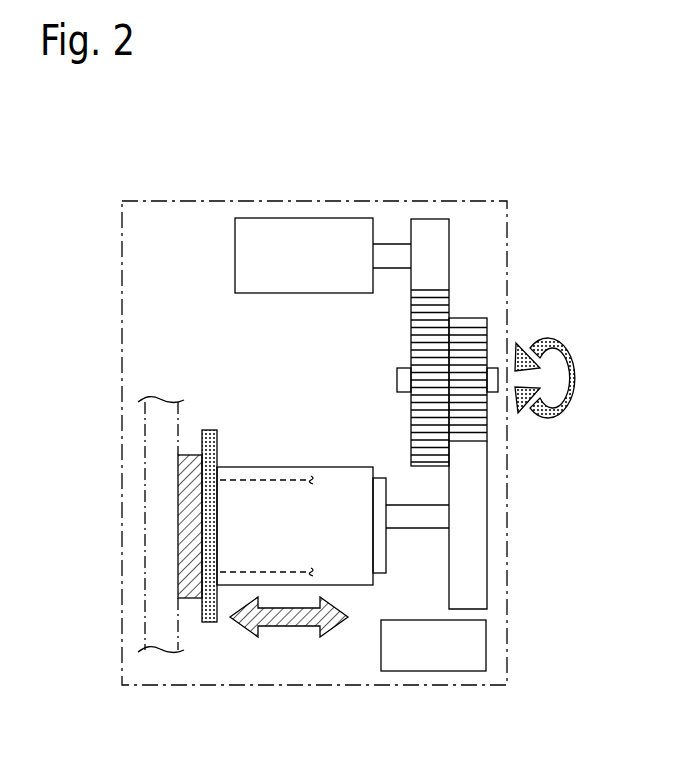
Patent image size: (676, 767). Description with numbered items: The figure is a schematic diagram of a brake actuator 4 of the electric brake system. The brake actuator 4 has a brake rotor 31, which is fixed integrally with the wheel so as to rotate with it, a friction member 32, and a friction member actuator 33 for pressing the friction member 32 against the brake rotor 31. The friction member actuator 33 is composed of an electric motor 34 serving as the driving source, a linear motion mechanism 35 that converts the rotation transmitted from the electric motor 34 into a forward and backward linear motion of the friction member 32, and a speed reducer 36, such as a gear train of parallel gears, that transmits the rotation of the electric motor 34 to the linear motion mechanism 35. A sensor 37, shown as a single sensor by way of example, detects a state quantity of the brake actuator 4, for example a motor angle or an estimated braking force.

The brake actuator 4 is at (122, 270).
The brake rotor 31 is at (155, 423).
The friction member 32 is at (190, 590).
The friction member actuator 33 is at (375, 145).
The electric motor 34 is at (303, 218).
The linear motion mechanism 35 is at (292, 467).
The speed reducer 36 is at (457, 298).
The sensor 37 is at (442, 667).